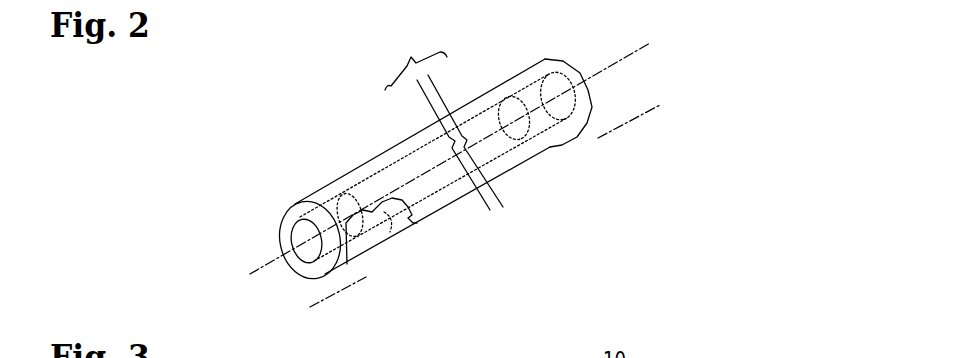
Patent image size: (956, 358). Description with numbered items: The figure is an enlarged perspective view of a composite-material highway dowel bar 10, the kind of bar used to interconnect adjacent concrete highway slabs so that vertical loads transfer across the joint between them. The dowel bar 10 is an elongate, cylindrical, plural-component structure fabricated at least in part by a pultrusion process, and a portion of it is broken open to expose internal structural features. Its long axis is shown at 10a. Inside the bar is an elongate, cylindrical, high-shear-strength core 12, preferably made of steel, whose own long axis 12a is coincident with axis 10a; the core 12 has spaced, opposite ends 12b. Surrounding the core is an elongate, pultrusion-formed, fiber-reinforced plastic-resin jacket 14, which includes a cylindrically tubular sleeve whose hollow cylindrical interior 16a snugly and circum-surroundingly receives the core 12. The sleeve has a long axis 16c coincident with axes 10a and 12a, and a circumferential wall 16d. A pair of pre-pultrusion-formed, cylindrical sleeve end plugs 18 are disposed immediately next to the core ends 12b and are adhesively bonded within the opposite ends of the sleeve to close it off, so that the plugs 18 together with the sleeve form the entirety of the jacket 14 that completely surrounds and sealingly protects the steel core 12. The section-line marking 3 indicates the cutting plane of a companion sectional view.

The dowel bar 10 is at (341, 67).
The core 12 is at (393, 159).
The ends of core 12b is at (500, 97).
The jacket 14 is at (452, 207).
The interior of sleeve 16a is at (378, 216).
The circumferential wall 16d is at (317, 276).
The sleeve end plugs 18 is at (300, 240).
The long axis of dowel bar 10a is at (613, 62).
The long axis of core 12a is at (450, 158).
The long axis of sleeve 16c is at (450, 158).
The section line 3- 3 is at (630, 121).